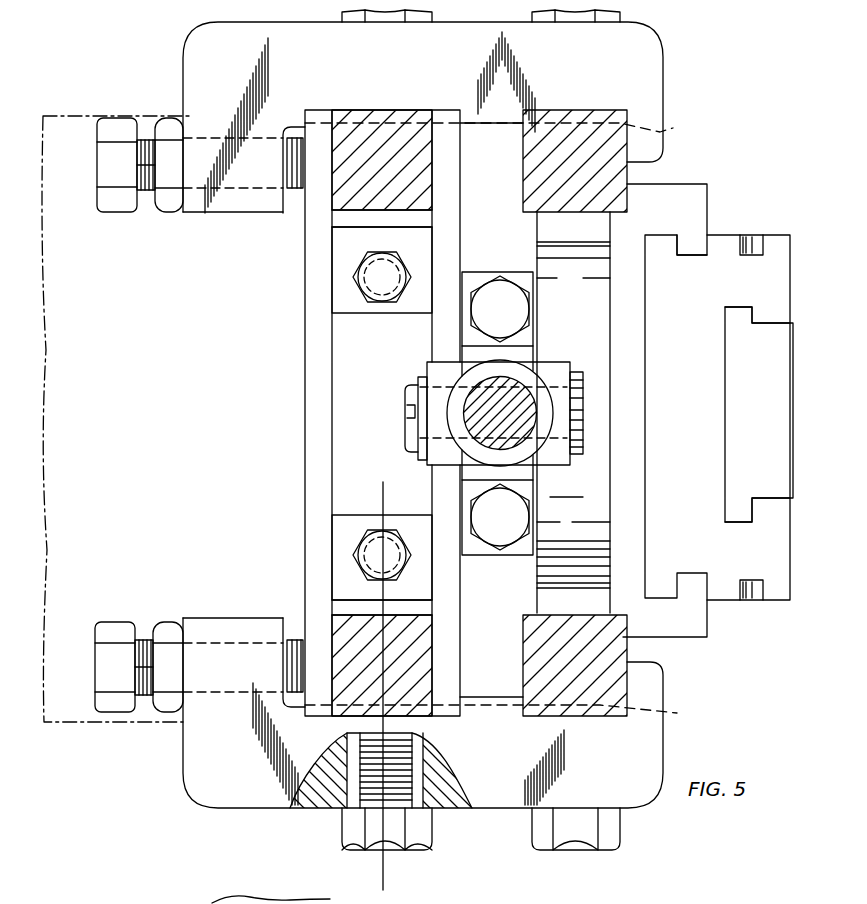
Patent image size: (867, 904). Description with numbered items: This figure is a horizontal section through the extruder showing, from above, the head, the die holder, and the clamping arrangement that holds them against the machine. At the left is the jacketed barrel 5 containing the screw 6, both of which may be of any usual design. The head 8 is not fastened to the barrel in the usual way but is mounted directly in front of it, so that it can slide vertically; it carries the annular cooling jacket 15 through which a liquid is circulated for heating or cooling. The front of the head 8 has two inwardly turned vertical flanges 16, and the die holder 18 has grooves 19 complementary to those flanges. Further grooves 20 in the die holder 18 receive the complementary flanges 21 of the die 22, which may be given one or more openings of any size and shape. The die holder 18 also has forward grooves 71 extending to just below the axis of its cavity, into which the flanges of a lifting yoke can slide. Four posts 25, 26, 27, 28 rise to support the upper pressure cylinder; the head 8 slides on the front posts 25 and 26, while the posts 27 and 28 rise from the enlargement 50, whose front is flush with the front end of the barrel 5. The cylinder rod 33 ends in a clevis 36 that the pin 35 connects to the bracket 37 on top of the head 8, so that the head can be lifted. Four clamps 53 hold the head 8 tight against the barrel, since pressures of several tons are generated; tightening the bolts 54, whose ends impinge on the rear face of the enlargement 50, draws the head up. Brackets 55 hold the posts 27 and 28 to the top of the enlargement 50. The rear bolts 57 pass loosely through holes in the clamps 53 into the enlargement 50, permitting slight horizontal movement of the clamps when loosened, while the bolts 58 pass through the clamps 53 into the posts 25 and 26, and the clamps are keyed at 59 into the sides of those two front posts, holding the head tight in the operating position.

The jacketed barrel 5 is at (77, 712).
The screw 6 is at (428, 482).
The head 8 is at (682, 409).
The annular cooling jacket 15 is at (582, 577).
The vertical flanges 16 is at (692, 240).
The die holder 18 is at (783, 253).
The grooves 19 is at (690, 251).
The grooves 20 is at (757, 313).
The flanges 21 is at (742, 512).
The die 22 is at (790, 472).
The post 25 is at (625, 683).
The post 26 is at (628, 172).
The post 27 is at (333, 633).
The post 28 is at (333, 200).
The cylinder rod 33 is at (467, 424).
The pin 35 is at (412, 395).
The clevis 36 is at (435, 367).
The bracket 37 is at (472, 345).
The enlargement 50 is at (305, 356).
The clamps 53 is at (202, 48).
The bolts 54 is at (147, 142).
The brackets 55 is at (333, 285).
The rear bolts 57 is at (342, 17).
The bolts 58 is at (620, 15).
The key 59 is at (506, 422).
The forward grooves 71 is at (757, 242).